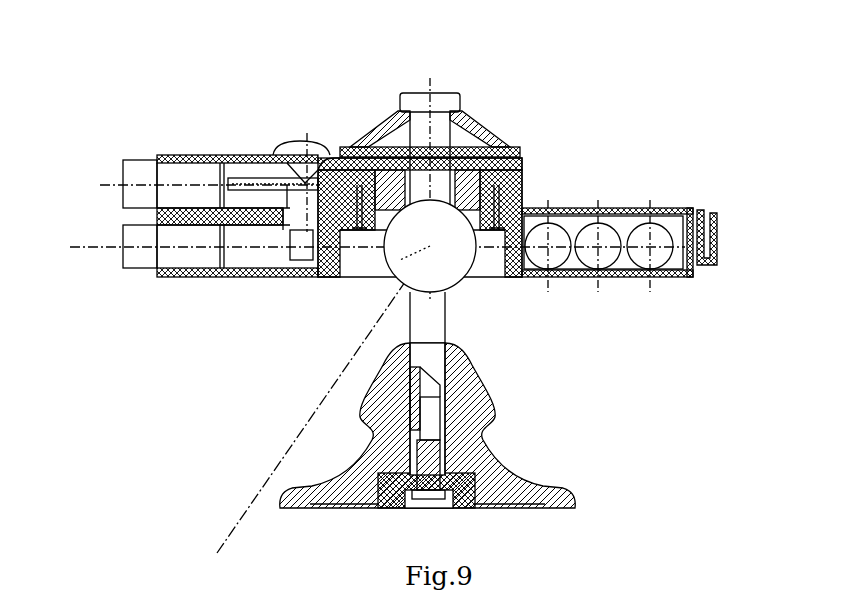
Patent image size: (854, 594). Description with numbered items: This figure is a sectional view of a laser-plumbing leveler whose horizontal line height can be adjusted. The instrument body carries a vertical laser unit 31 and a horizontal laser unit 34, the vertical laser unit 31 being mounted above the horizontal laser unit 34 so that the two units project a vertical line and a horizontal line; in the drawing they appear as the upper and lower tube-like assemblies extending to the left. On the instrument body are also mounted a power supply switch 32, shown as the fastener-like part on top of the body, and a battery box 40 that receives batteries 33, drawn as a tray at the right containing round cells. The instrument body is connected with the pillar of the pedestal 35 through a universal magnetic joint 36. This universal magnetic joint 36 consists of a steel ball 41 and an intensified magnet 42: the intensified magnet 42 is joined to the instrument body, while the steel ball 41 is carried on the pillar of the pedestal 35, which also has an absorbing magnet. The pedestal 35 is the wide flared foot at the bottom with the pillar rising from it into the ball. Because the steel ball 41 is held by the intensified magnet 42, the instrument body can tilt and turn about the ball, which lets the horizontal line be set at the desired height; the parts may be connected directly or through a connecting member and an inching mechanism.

The vertical laser unit 31 is at (142, 172).
The power supply switch 32 is at (397, 101).
The batteries 33 is at (550, 237).
The horizontal laser unit 34 is at (140, 260).
The pedestal 35 is at (352, 408).
The universal magnetic joint 36 is at (430, 246).
The battery box 40 is at (628, 208).
The steel ball 41 is at (445, 268).
The intensified magnet 42 is at (490, 152).